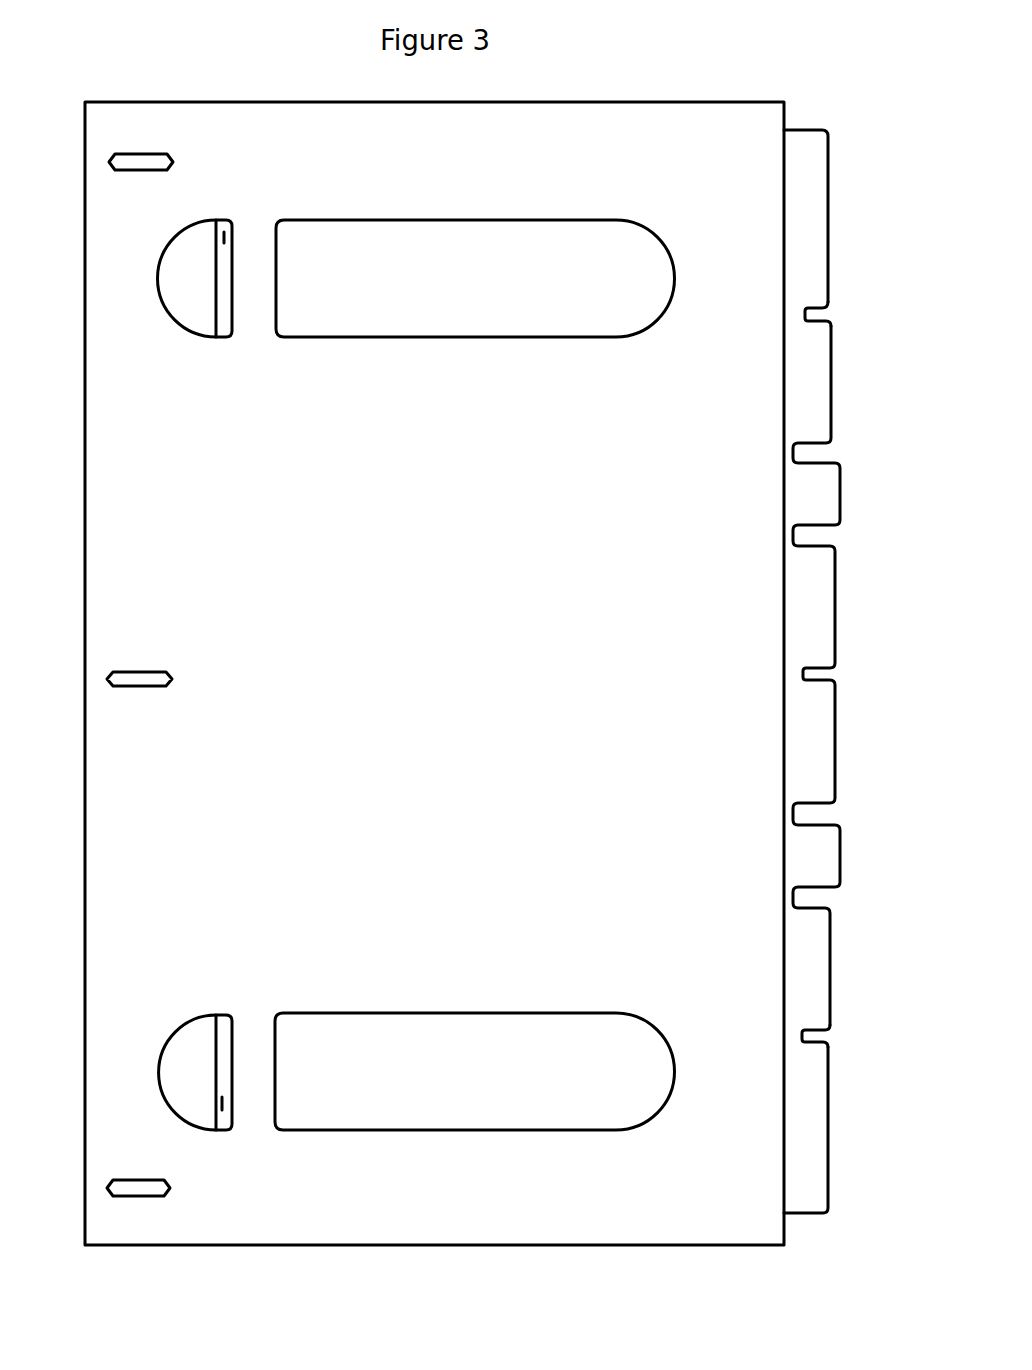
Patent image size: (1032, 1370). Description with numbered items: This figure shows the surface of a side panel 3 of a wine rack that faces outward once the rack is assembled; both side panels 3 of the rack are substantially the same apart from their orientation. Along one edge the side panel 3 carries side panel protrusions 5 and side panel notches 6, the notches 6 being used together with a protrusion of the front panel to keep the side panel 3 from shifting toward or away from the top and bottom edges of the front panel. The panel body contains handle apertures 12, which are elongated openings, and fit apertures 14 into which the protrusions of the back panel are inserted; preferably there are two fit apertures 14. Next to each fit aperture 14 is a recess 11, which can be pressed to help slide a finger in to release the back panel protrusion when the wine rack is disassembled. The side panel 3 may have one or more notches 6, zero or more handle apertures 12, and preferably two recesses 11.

The side panel 3 is at (728, 145).
The side panel protrusion 5 is at (827, 493).
The side panel notch 6 is at (825, 313).
The recess 11 is at (167, 282).
The handle aperture 12 is at (616, 240).
The fit aperture 14 is at (224, 243).